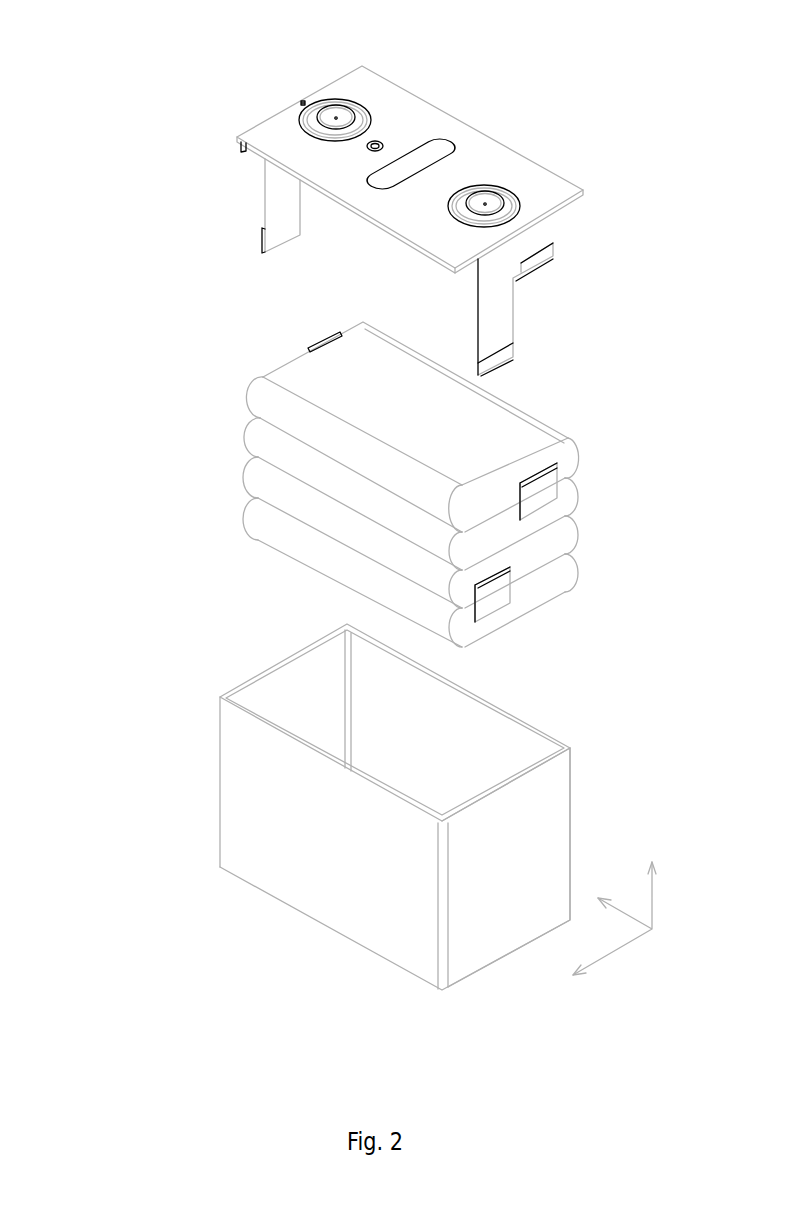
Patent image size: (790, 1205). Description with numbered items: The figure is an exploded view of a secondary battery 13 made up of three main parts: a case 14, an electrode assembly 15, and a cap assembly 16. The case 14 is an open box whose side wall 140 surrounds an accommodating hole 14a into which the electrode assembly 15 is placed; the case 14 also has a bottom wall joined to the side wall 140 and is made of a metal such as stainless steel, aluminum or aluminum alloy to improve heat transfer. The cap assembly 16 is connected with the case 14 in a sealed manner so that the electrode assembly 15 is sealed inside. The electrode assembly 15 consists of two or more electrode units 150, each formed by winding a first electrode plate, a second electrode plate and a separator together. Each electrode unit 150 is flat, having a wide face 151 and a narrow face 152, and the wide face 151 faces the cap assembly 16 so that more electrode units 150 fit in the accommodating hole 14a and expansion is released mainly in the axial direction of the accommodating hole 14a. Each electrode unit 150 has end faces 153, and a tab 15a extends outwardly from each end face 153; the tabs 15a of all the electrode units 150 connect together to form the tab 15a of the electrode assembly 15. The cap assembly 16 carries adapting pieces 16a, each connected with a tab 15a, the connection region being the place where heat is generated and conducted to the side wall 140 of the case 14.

The secondary battery 13 is at (450, 32).
The case 14 is at (148, 797).
The accommodating hole 14a is at (518, 742).
The side wall 140 is at (500, 907).
The electrode assembly 15 is at (165, 434).
The tab 15a is at (544, 488).
The electrode unit 150 is at (388, 470).
The wide face 151 is at (340, 373).
The narrow face 152 is at (268, 400).
The end face 153 is at (562, 553).
The cap assembly 16 is at (385, 205).
The adapting piece 16a is at (282, 196).